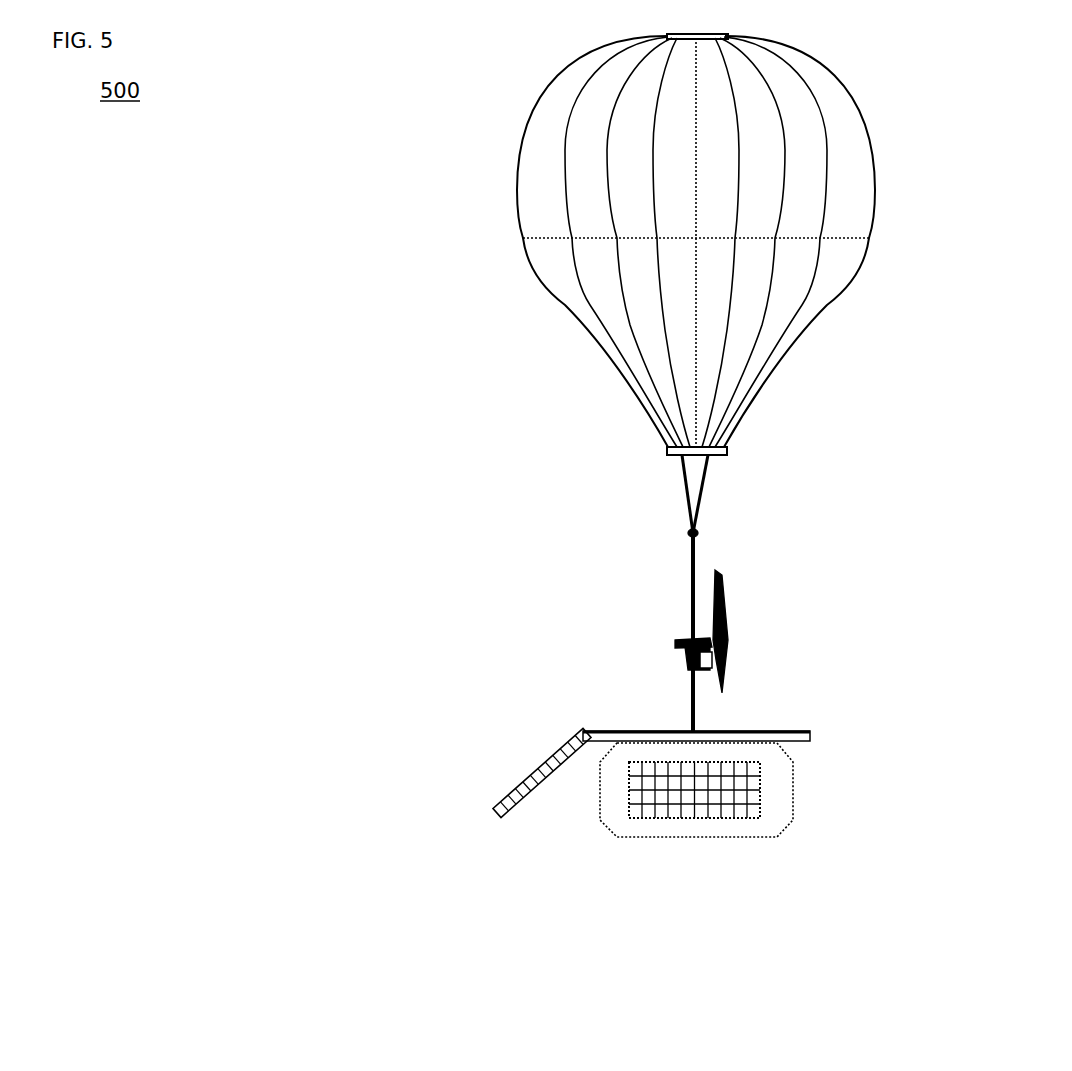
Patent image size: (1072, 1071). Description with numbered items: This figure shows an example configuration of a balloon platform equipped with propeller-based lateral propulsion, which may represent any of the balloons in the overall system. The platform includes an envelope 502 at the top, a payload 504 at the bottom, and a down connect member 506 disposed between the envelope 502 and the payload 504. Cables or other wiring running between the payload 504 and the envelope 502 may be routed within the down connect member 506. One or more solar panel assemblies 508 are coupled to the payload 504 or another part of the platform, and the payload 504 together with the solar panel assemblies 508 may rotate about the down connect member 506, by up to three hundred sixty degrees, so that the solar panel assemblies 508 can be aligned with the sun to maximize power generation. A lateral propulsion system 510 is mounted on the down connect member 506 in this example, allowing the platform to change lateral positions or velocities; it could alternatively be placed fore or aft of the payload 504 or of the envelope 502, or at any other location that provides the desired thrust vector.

The envelope 502 is at (833, 299).
The payload 504 is at (793, 760).
The down connect member 506 is at (628, 564).
The solar panel assemblies 508 is at (520, 790).
The lateral propulsion system 510 is at (775, 626).